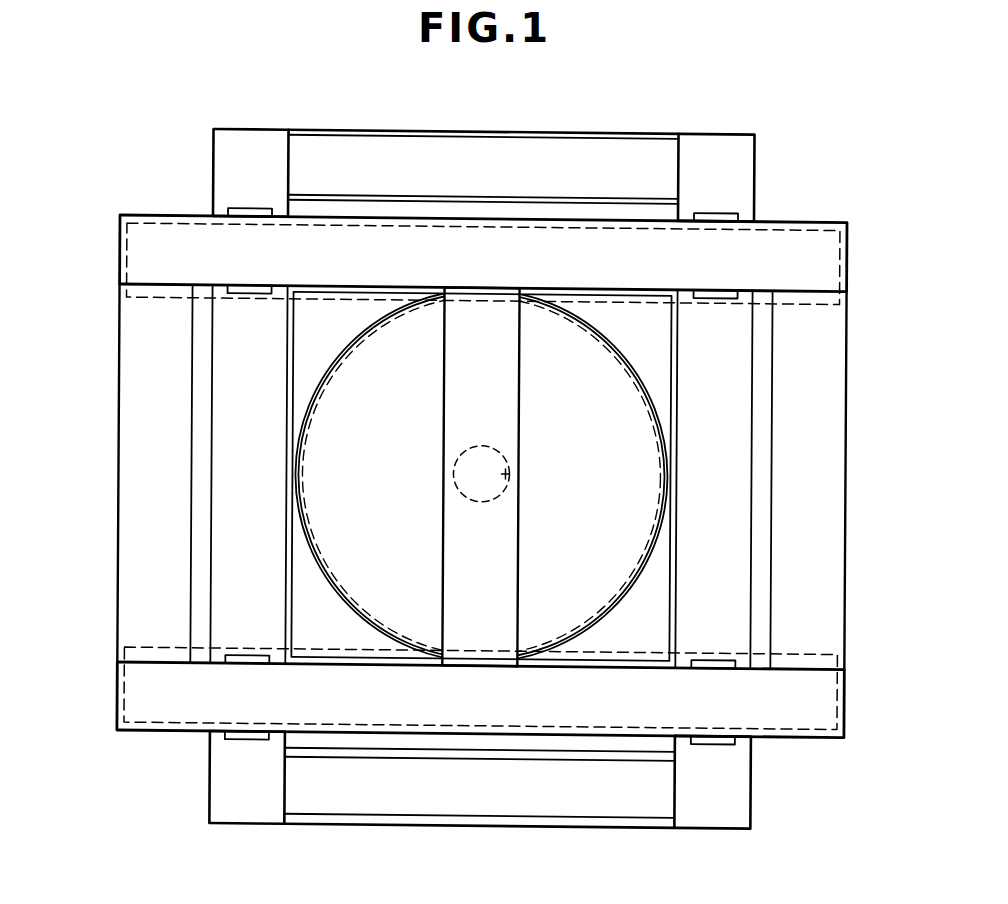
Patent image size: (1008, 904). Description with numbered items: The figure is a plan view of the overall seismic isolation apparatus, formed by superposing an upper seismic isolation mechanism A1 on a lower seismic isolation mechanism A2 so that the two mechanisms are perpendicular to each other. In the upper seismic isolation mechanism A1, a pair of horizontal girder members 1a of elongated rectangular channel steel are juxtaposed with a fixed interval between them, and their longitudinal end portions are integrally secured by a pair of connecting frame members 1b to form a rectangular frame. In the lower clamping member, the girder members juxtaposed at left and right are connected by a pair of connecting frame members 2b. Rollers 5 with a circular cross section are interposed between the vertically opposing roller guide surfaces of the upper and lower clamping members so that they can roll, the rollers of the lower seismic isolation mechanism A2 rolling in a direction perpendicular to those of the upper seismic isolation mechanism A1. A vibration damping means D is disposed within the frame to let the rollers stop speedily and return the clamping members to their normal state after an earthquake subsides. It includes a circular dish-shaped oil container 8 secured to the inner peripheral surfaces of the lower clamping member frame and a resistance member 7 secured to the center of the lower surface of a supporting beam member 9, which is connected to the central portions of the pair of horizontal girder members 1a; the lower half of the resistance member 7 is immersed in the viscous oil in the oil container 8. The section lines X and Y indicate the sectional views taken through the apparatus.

The horizontal girder member 1a is at (793, 246).
The connecting frame member 1b is at (135, 364).
The connecting frame member 2b is at (512, 151).
The roller 5 is at (720, 208).
The resistance member 7 is at (529, 451).
The oil container 8 is at (370, 581).
The supporting beam member 9 is at (508, 378).
The vibration damping means D is at (634, 360).
The section line X is at (120, 477).
The section line Y is at (715, 128).
The upper seismic isolation mechanism A1 is at (773, 743).
The lower seismic isolation mechanism A2 is at (749, 828).